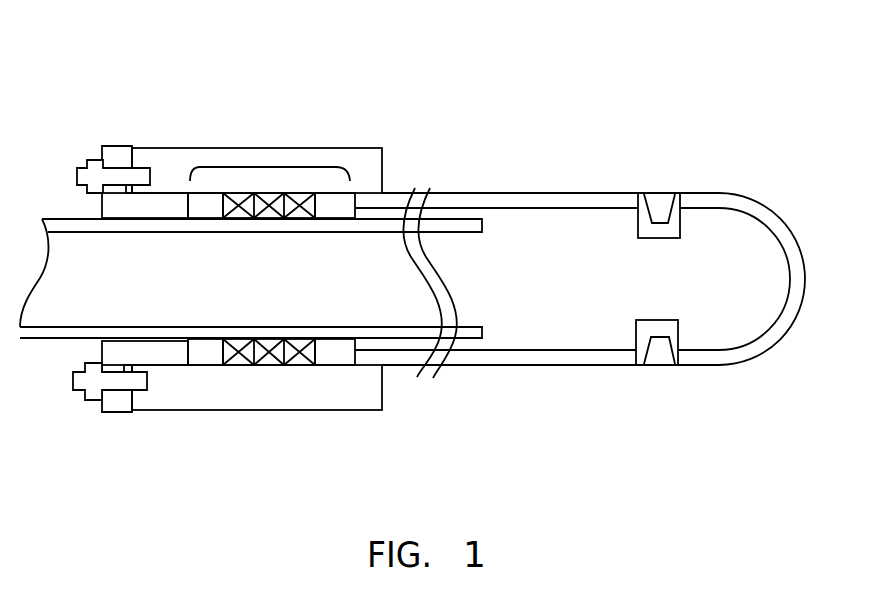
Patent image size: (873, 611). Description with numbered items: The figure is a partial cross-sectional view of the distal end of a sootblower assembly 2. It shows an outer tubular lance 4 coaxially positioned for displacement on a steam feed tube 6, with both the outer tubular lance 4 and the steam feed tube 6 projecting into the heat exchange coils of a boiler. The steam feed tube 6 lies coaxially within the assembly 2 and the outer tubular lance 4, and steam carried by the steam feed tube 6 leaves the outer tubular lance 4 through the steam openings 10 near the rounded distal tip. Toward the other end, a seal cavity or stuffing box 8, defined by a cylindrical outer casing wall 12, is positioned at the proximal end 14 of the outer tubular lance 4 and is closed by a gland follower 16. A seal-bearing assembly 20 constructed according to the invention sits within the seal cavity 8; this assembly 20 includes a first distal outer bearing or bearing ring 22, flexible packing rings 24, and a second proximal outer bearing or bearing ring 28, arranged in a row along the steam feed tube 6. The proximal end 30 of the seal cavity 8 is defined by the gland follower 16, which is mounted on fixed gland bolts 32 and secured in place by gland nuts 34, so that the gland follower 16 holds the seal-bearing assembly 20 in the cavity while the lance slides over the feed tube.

The sootblower assembly 2 is at (580, 239).
The outer tubular lance 4 is at (580, 289).
The steam feed tube 6 is at (457, 223).
The seal cavity 8 is at (183, 292).
The steam openings 10 is at (658, 203).
The cylindrical outer casing wall 12 is at (215, 400).
The proximal end 14 is at (280, 157).
The gland follower 16 is at (157, 200).
The seal-bearing assembly 20 is at (272, 167).
The first distal outer bearing 22 is at (332, 365).
The flexible packing rings 24 is at (268, 365).
The second proximal outer bearing 28 is at (188, 197).
The proximal end 30 is at (118, 312).
The gland bolts 32 is at (127, 157).
The gland nuts 34 is at (100, 160).